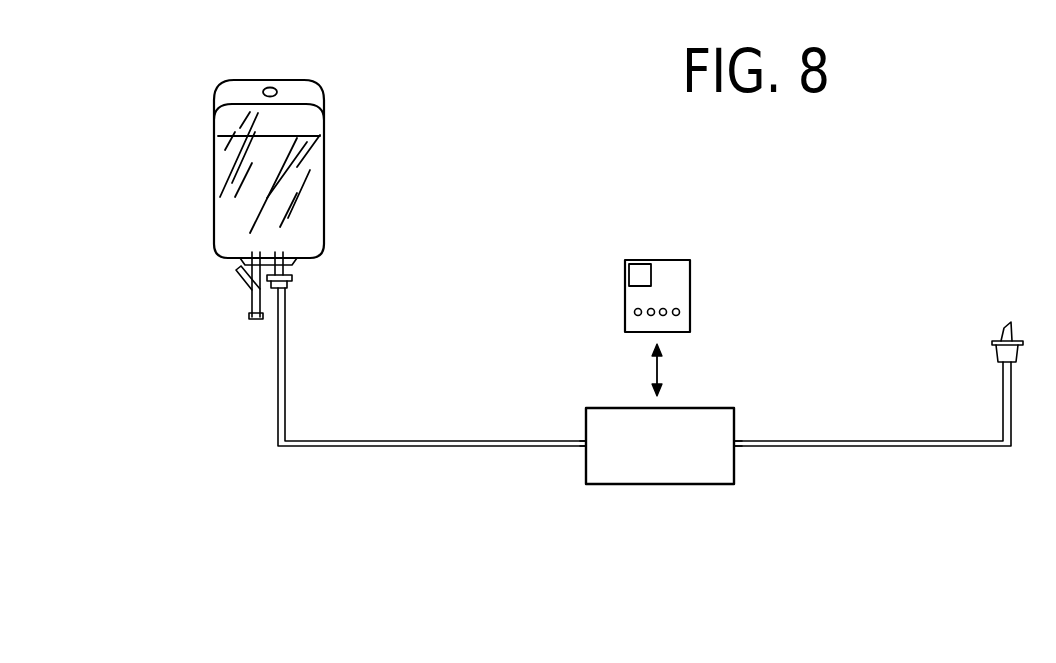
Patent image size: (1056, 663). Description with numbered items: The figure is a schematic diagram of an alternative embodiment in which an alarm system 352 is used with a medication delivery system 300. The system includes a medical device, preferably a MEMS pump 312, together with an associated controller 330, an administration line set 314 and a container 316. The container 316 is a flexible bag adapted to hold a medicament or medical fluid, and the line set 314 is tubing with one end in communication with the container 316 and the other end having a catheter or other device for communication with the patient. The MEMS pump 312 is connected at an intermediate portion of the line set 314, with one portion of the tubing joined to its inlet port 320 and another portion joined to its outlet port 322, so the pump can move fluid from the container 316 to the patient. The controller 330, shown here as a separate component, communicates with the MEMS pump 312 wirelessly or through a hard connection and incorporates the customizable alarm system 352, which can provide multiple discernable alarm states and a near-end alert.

The medication delivery system 300 is at (492, 309).
The MEMS pump 312 is at (700, 408).
The administration line set 314 is at (422, 447).
The container 316 is at (316, 170).
The inlet port 320 is at (585, 440).
The outlet port 322 is at (735, 441).
The controller 330 is at (690, 281).
The alarm system 352 is at (639, 272).